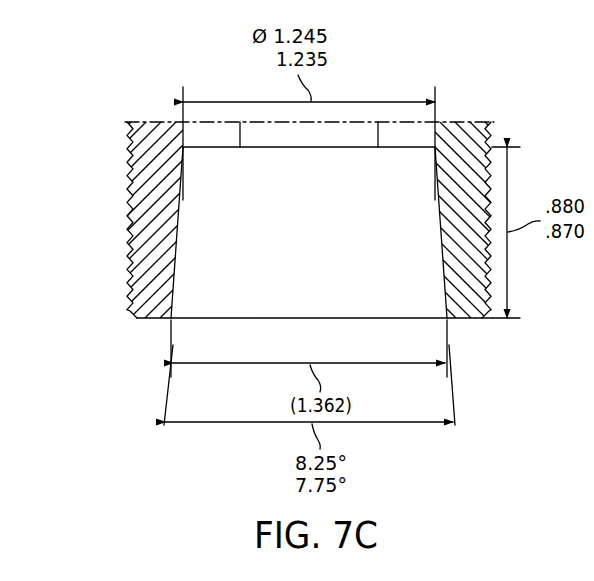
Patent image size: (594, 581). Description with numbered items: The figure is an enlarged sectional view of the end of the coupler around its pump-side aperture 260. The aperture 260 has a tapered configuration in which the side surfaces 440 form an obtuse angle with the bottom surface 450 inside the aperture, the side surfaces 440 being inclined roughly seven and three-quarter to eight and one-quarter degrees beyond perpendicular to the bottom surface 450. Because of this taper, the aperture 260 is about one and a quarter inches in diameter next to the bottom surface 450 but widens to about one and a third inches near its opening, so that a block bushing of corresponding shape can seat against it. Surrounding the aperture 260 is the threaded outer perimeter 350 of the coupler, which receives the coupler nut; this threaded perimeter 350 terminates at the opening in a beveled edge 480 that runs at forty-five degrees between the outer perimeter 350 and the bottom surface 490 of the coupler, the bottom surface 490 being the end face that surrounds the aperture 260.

The pump-side aperture 260 is at (335, 306).
The outer perimeter 350 is at (130, 251).
The side surfaces 440 is at (178, 232).
The bottom surface 450 is at (222, 148).
The beveled edge 480 is at (135, 316).
The bottom surface of the coupler 490 is at (462, 322).